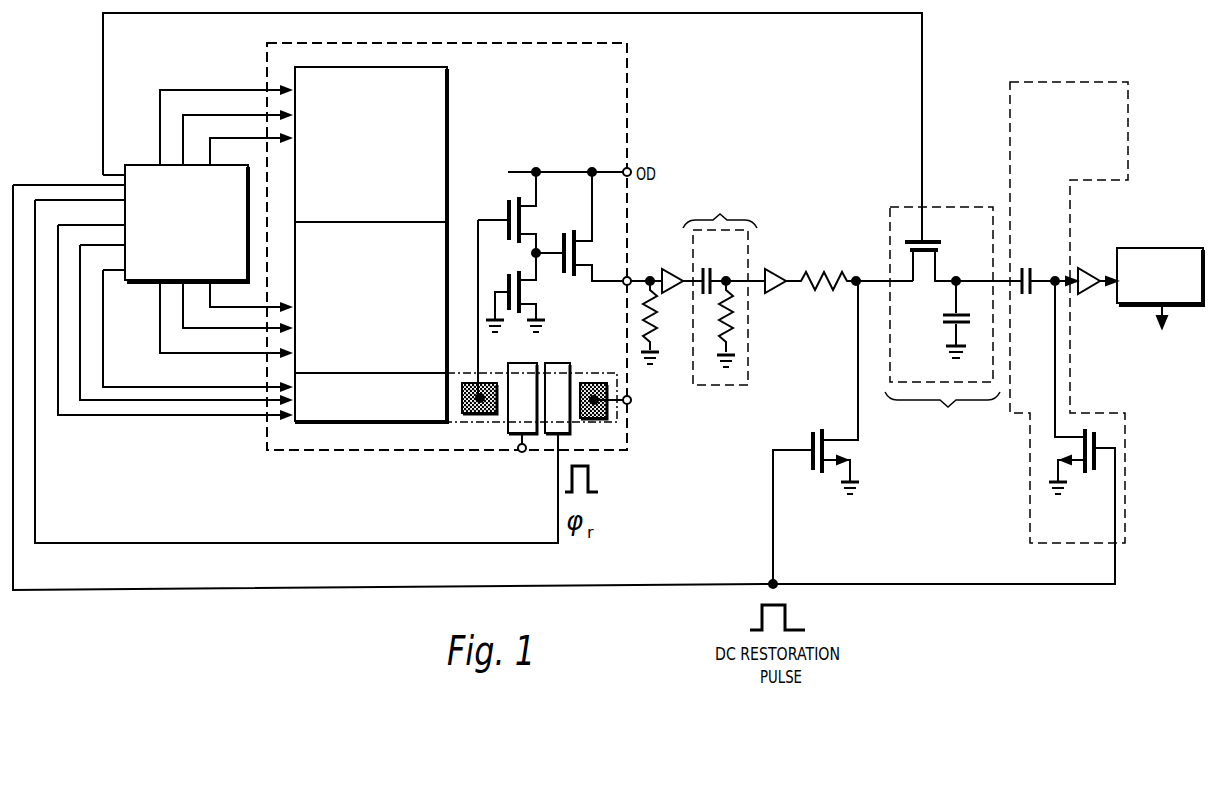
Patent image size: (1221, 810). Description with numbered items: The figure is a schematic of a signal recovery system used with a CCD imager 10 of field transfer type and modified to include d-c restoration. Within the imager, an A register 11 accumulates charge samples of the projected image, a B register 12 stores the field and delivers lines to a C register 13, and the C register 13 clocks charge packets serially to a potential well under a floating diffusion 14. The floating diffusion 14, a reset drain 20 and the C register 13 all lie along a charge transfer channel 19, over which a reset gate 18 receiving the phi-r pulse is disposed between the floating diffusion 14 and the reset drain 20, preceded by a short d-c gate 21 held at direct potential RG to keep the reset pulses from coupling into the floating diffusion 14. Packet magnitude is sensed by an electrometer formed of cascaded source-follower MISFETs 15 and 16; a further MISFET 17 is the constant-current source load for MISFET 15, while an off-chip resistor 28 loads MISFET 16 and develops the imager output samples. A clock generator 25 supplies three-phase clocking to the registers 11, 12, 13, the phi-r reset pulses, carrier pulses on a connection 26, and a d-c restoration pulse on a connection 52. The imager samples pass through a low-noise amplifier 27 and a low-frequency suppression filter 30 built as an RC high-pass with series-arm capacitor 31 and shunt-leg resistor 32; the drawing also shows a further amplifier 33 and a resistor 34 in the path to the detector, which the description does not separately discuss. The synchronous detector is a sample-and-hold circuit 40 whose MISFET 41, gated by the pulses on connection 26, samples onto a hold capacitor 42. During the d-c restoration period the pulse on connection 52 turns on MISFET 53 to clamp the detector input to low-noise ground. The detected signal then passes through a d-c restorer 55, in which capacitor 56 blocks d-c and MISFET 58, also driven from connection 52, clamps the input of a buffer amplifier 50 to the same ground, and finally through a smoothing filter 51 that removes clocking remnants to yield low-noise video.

The CCD imager 10 is at (570, 108).
The A register 11 is at (382, 179).
The B register 12 is at (384, 325).
The C register 13 is at (432, 411).
The floating diffusion 14 is at (475, 392).
The source-follower MISFET 15 is at (530, 217).
The source-follower MISFET 16 is at (588, 254).
The MISFET 17 is at (538, 290).
The reset gate 18 is at (560, 363).
The charge transfer channel 19 is at (609, 380).
The reset drain 20 is at (586, 383).
The d-c gate 21 is at (527, 346).
The clock generator 25 is at (149, 164).
The connection 26 is at (925, 111).
The low-noise amplifier 27 is at (679, 269).
The off-chip resistor 28 is at (663, 324).
The low-frequency suppression filter 30 is at (713, 262).
The series-arm capacitor 31 is at (710, 269).
The shunt-leg resistor 32 is at (735, 318).
The amplifier 33 is at (777, 270).
The resistor 34 is at (823, 270).
The sample-and-hold circuit 40 is at (945, 375).
The MISFET 41 is at (937, 241).
The capacitor 42 is at (945, 318).
The buffer amplifier 50 is at (1088, 262).
The smoothing filter 51 is at (1152, 247).
The connection 52 is at (344, 588).
The MISFET 53 is at (822, 474).
The d-c restorer 55 is at (1070, 148).
The capacitor 56 is at (1035, 262).
The MISFET 58 is at (1094, 474).